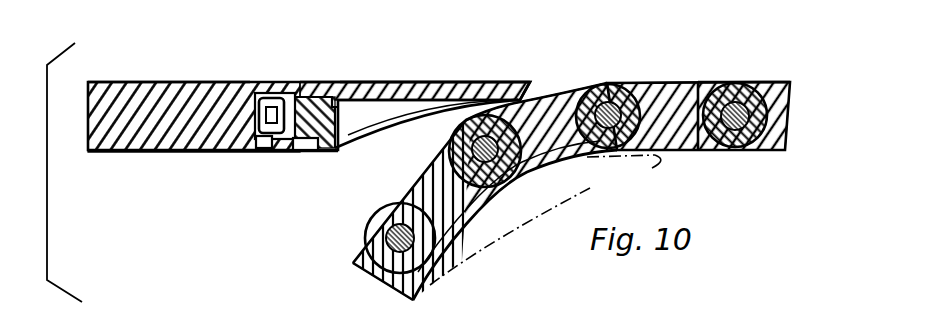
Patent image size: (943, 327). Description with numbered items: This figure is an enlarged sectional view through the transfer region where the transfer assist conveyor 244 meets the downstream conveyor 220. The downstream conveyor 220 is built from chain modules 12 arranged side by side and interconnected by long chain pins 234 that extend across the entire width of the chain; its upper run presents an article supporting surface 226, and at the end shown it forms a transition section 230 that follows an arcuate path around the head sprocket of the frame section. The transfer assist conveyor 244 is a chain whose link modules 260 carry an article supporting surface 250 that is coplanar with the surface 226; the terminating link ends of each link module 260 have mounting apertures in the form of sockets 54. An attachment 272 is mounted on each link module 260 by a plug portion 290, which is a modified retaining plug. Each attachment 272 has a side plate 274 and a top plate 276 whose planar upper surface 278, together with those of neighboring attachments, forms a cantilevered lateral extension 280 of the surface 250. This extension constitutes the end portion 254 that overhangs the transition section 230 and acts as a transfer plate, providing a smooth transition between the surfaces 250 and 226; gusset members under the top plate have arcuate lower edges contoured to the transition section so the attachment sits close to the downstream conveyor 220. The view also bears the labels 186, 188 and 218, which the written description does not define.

The chain module 12 is at (562, 92).
The socket 54 is at (270, 93).
The lip edge 186 is at (391, 112).
The lip 188 is at (387, 136).
The pivot centerline 218 is at (600, 186).
The downstream conveyor 220 is at (745, 160).
The article supporting surface 226 is at (740, 82).
The transition section 230 is at (345, 265).
The chain pin 234 is at (635, 84).
The transfer assist conveyor 244 is at (150, 158).
The article supporting surface 250 is at (165, 82).
The end portion 254 is at (533, 90).
The link module 260 is at (128, 82).
The attachment 272 is at (332, 74).
The side plate 274 is at (317, 153).
The top plate 276 is at (368, 82).
The planar upper surface 278 is at (477, 82).
The cantilevered lateral extension 280 is at (423, 82).
The plug portion 290 is at (298, 160).